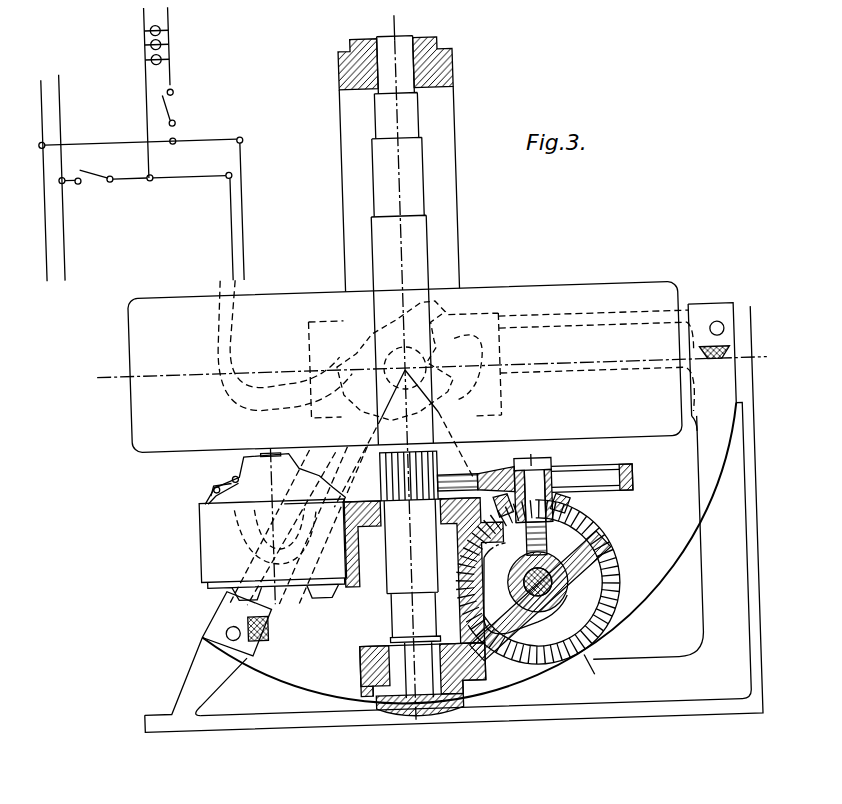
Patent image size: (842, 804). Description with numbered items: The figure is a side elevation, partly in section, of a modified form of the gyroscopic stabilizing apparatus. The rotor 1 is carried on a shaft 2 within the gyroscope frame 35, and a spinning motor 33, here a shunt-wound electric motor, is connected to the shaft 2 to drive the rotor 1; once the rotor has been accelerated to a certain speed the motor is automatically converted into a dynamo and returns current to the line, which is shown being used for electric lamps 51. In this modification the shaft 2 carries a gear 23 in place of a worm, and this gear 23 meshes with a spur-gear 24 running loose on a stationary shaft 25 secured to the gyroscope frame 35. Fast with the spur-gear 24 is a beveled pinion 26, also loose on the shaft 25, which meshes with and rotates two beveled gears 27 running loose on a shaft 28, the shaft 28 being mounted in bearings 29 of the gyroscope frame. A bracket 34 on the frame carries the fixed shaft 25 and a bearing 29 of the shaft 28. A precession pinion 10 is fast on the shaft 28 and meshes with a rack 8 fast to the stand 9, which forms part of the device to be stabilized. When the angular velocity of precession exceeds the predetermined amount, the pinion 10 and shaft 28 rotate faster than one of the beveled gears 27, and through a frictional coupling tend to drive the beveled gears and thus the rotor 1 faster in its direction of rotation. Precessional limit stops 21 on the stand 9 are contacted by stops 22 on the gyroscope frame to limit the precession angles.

The rotor 1 is at (602, 303).
The shaft 2 is at (423, 265).
The rack 8 is at (662, 564).
The stand 9 is at (724, 624).
The precession pinion 10 is at (507, 615).
The precessional limit stop 21 is at (728, 368).
The stop 22 is at (565, 695).
The gear 23 is at (420, 470).
The spur-gear 24 is at (628, 487).
The stationary shaft 25 is at (537, 472).
The beveled pinion 26 is at (571, 507).
The beveled gear 27 is at (582, 554).
The shaft 28 is at (566, 585).
The bearing 29 is at (560, 595).
The spinning motor 33 is at (195, 534).
The bracket 34 is at (471, 540).
The gyroscope frame 35 is at (449, 227).
The electric lamp 51 is at (155, 35).